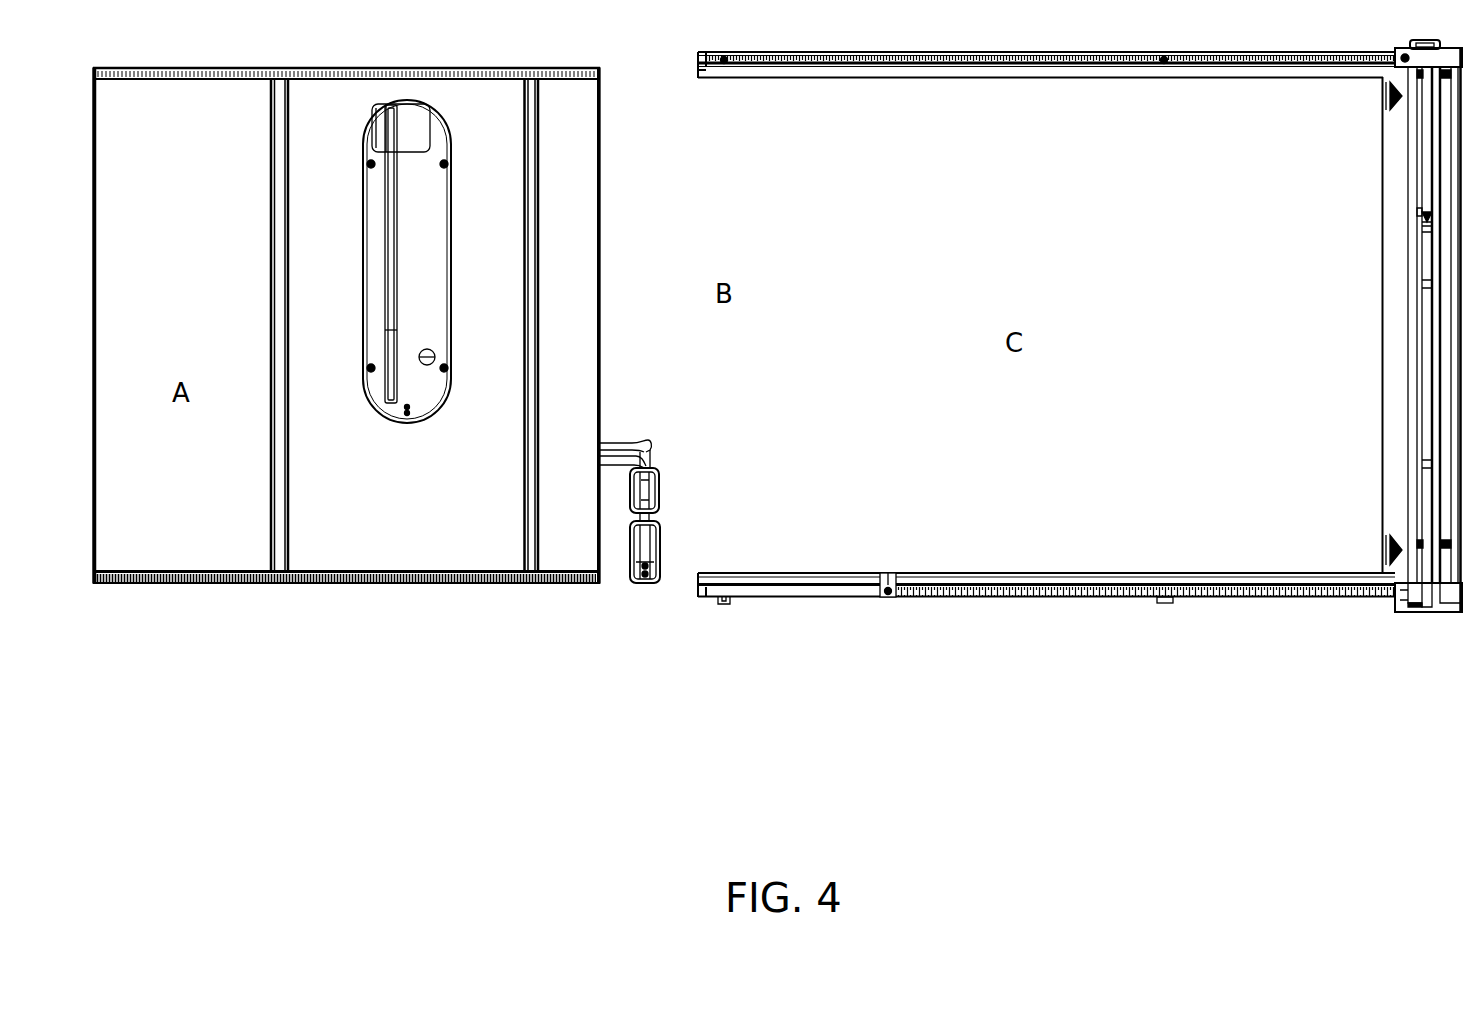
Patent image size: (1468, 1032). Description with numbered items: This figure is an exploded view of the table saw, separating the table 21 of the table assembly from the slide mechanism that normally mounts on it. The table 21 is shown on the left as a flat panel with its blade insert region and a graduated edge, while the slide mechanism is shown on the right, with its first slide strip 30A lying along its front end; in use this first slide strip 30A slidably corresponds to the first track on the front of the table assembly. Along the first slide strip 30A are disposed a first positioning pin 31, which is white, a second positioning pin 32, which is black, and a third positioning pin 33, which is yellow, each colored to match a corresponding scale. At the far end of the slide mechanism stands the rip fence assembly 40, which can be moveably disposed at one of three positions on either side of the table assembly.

The table 21 is at (346, 398).
The first slide strip 30A is at (826, 600).
The first positioning pin 31 is at (1403, 613).
The second positioning pin 32 is at (1165, 603).
The third positioning pin 33 is at (725, 604).
The rip fence assembly 40 is at (1425, 377).